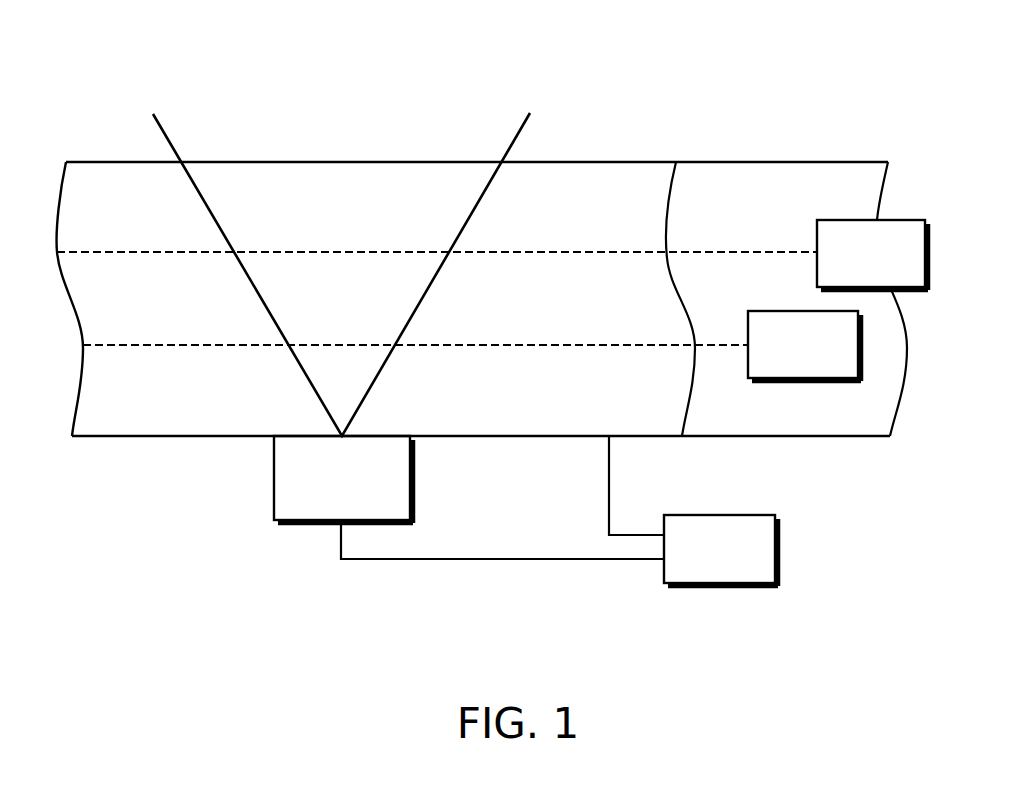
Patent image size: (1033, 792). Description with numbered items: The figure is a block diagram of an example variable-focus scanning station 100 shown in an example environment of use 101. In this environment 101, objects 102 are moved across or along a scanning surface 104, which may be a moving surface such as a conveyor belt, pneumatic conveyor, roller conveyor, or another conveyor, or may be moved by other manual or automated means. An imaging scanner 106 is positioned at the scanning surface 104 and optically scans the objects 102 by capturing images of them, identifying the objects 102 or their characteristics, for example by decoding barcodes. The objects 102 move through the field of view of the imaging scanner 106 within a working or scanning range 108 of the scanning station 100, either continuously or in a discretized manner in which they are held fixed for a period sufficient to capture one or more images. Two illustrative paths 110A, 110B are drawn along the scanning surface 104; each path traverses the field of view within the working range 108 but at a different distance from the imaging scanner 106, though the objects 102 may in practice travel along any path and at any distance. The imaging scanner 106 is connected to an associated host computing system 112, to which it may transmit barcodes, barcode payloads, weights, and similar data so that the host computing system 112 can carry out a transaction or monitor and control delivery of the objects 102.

The variable-focus scanning station 100 is at (427, 601).
The environment of use 101 is at (121, 70).
The objects 102 is at (896, 267).
The scanning surface 104 is at (776, 168).
The imaging scanner 106 is at (274, 478).
The working range 108 is at (379, 222).
The path 110A is at (501, 345).
The path 110B is at (577, 252).
The host computing system 112 is at (720, 588).